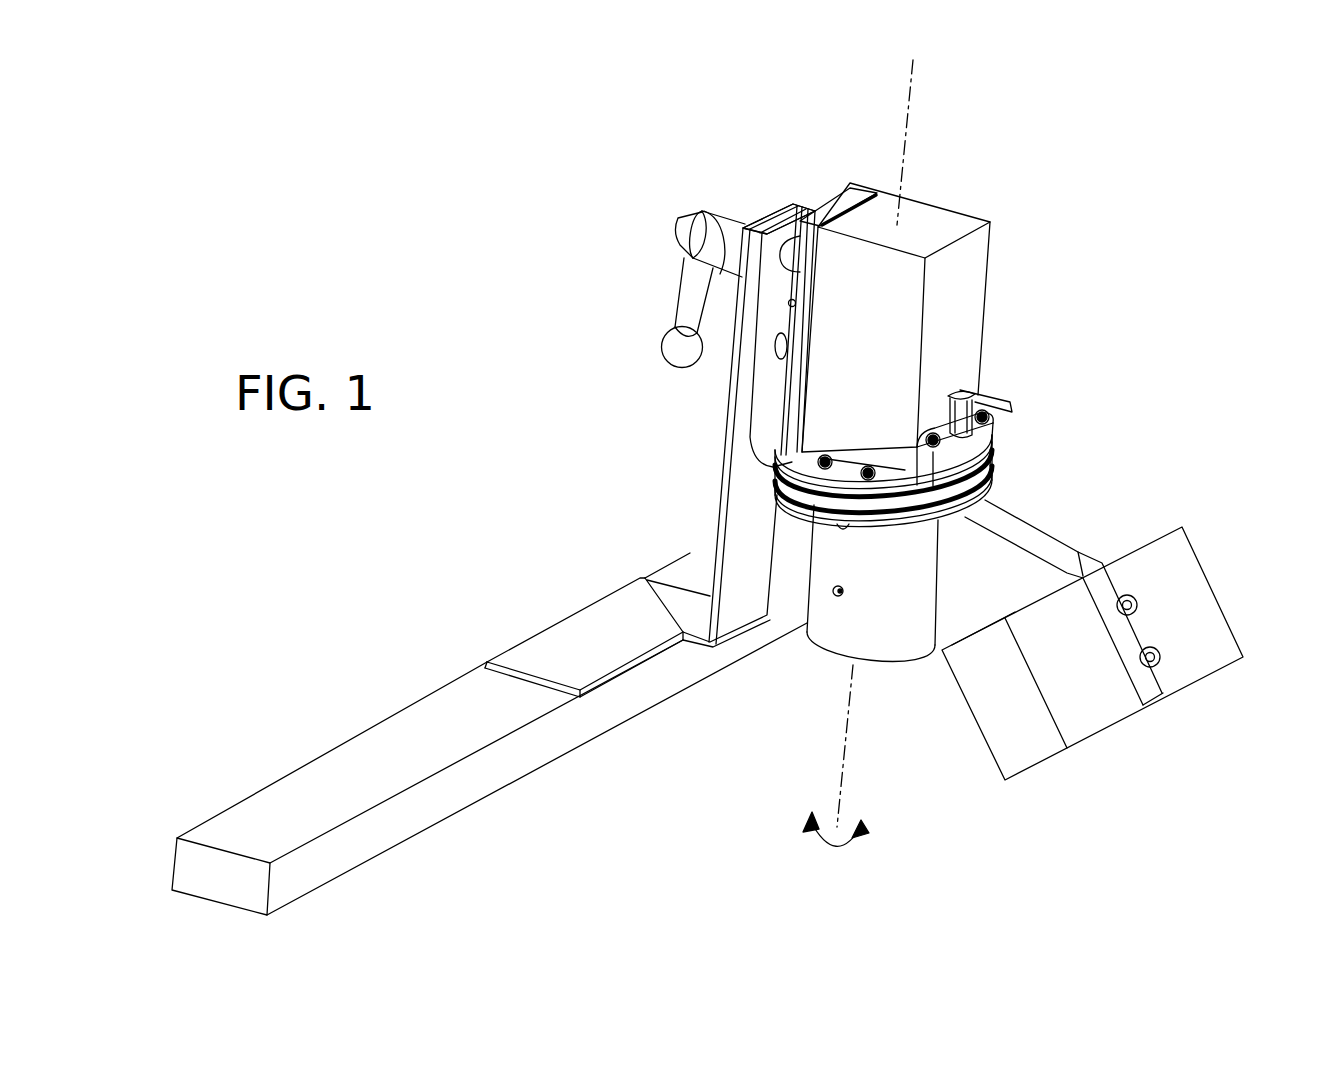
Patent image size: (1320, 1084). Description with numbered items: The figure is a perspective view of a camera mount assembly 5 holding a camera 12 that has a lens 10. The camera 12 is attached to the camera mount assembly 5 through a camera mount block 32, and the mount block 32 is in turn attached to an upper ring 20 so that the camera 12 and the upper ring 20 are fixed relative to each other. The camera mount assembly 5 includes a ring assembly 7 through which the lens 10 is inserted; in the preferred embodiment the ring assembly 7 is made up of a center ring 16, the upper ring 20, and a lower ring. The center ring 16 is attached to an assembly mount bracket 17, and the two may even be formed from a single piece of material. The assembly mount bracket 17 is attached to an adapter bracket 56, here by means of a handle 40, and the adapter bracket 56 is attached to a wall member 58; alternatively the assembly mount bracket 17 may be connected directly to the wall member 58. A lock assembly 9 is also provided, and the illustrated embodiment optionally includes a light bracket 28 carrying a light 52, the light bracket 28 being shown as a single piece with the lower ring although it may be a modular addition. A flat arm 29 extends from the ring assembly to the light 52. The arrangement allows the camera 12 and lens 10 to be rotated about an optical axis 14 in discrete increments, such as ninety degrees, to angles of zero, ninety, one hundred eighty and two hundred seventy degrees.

The camera mount assembly 5 is at (766, 193).
The ring assembly 7 is at (871, 540).
The lock assembly 9 is at (1010, 427).
The lens 10 is at (828, 632).
The camera 12 is at (960, 308).
The optical axis 14 is at (812, 773).
The center ring 16 is at (978, 495).
The assembly mount bracket 17 is at (757, 377).
The upper ring 20 is at (983, 482).
The light bracket 28 is at (900, 518).
The arm 29 is at (1022, 527).
The camera mount block 32 is at (836, 200).
The handle 40 is at (676, 290).
The light 52 is at (1178, 657).
The adapter bracket 56 is at (578, 645).
The wall member 58 is at (413, 727).